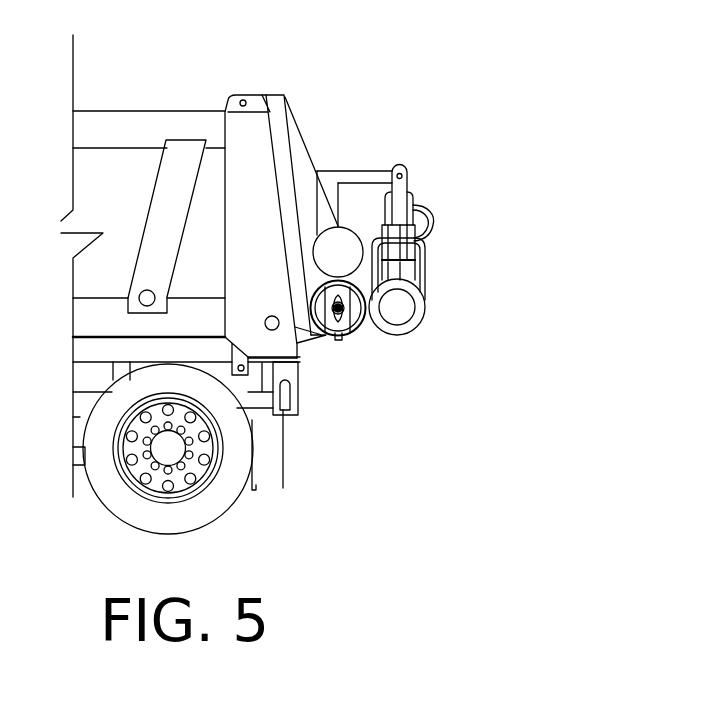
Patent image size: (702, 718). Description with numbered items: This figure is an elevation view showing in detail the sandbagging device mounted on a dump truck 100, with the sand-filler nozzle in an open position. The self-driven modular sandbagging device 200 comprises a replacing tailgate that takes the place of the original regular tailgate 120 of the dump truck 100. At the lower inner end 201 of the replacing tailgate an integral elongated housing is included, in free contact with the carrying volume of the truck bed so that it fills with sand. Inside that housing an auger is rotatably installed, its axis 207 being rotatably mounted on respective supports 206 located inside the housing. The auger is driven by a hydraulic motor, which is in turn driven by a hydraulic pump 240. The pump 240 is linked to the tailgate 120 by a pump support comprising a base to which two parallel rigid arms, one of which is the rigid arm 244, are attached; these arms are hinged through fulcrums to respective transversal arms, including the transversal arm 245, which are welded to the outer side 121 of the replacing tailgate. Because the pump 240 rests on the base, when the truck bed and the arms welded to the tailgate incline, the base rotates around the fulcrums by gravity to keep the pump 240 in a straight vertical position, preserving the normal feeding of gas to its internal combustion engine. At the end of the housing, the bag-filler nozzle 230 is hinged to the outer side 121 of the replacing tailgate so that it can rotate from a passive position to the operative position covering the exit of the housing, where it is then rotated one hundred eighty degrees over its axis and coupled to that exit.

The dump truck 100 is at (148, 83).
The tailgate 120 is at (277, 92).
The outer side 121 is at (298, 132).
The self-driven modular sandbagging device 200 is at (361, 325).
The lower inner end 201 is at (297, 343).
The supports 206 is at (358, 297).
The axis 207 is at (347, 337).
The bag-filler nozzle 230 is at (405, 273).
The hydraulic pump 240 is at (442, 220).
The rigid arm 244 is at (397, 205).
The transversal arm 245 is at (373, 178).